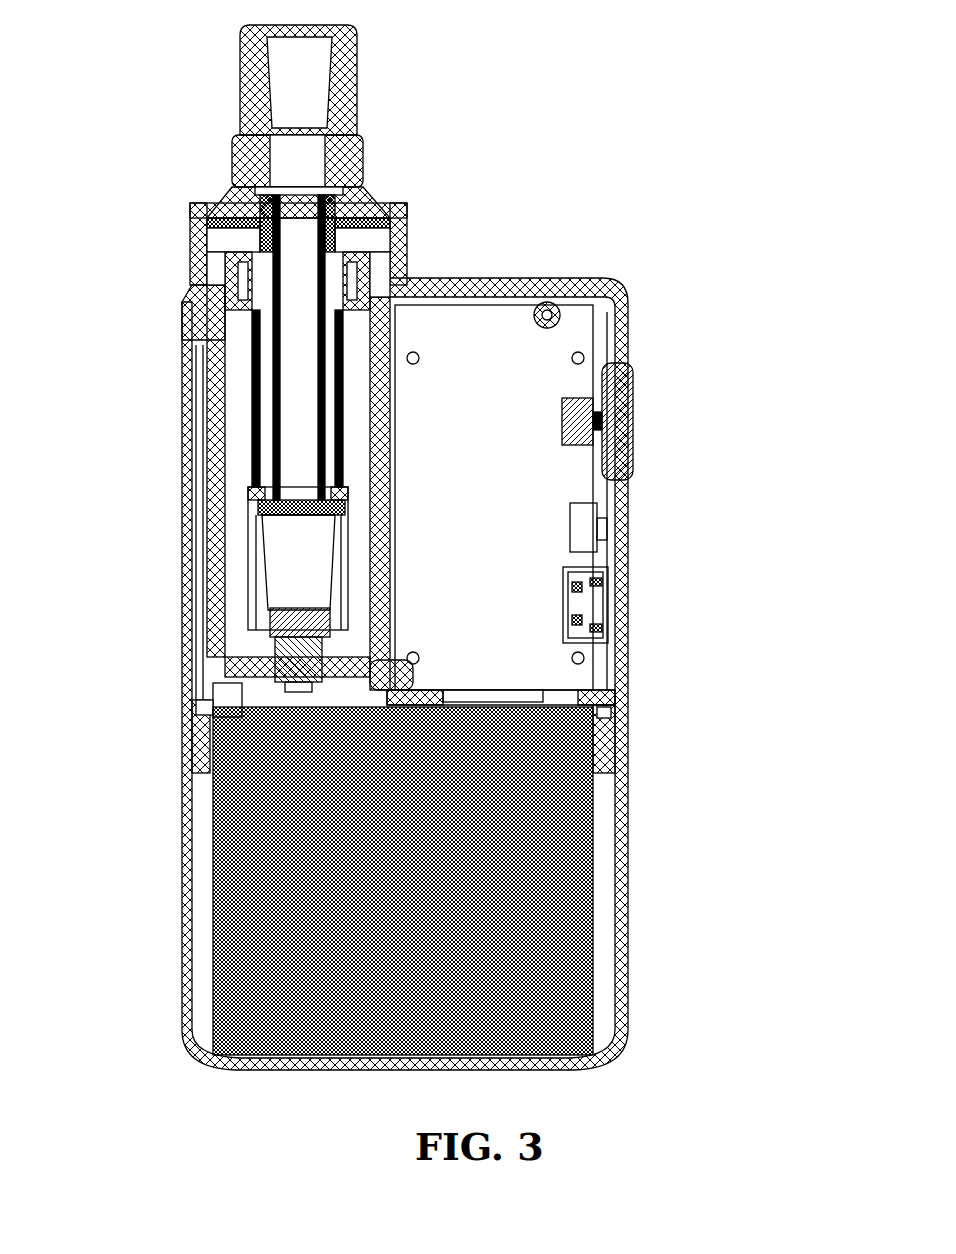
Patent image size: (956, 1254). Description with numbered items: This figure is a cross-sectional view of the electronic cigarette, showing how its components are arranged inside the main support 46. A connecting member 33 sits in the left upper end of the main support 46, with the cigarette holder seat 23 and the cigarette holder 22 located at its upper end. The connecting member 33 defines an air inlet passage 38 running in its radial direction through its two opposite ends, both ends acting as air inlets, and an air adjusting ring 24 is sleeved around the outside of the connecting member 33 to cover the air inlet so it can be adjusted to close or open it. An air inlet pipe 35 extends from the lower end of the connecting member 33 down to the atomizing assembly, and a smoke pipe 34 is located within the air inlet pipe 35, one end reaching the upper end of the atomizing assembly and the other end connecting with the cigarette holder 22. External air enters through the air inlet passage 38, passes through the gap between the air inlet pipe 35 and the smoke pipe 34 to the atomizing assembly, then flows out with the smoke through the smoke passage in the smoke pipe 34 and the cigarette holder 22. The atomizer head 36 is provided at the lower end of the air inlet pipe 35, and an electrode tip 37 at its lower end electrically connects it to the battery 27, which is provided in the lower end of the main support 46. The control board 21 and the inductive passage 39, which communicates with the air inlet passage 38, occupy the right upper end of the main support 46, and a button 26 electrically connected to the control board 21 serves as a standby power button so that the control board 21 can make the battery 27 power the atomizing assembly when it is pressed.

The control board 21 is at (590, 470).
The cigarette holder 22 is at (361, 80).
The cigarette holder seat 23 is at (341, 159).
The air adjusting ring 24 is at (234, 227).
The button 26 is at (689, 413).
The battery 27 is at (518, 851).
The connecting member 33 is at (231, 167).
The smoke pipe 34 is at (205, 351).
The air inlet pipe 35 is at (203, 398).
The atomizer head 36 is at (206, 555).
The electrode tip 37 is at (216, 630).
The air inlet passage 38 is at (344, 206).
The inductive passage 39 is at (344, 257).
The main support 46 is at (421, 646).